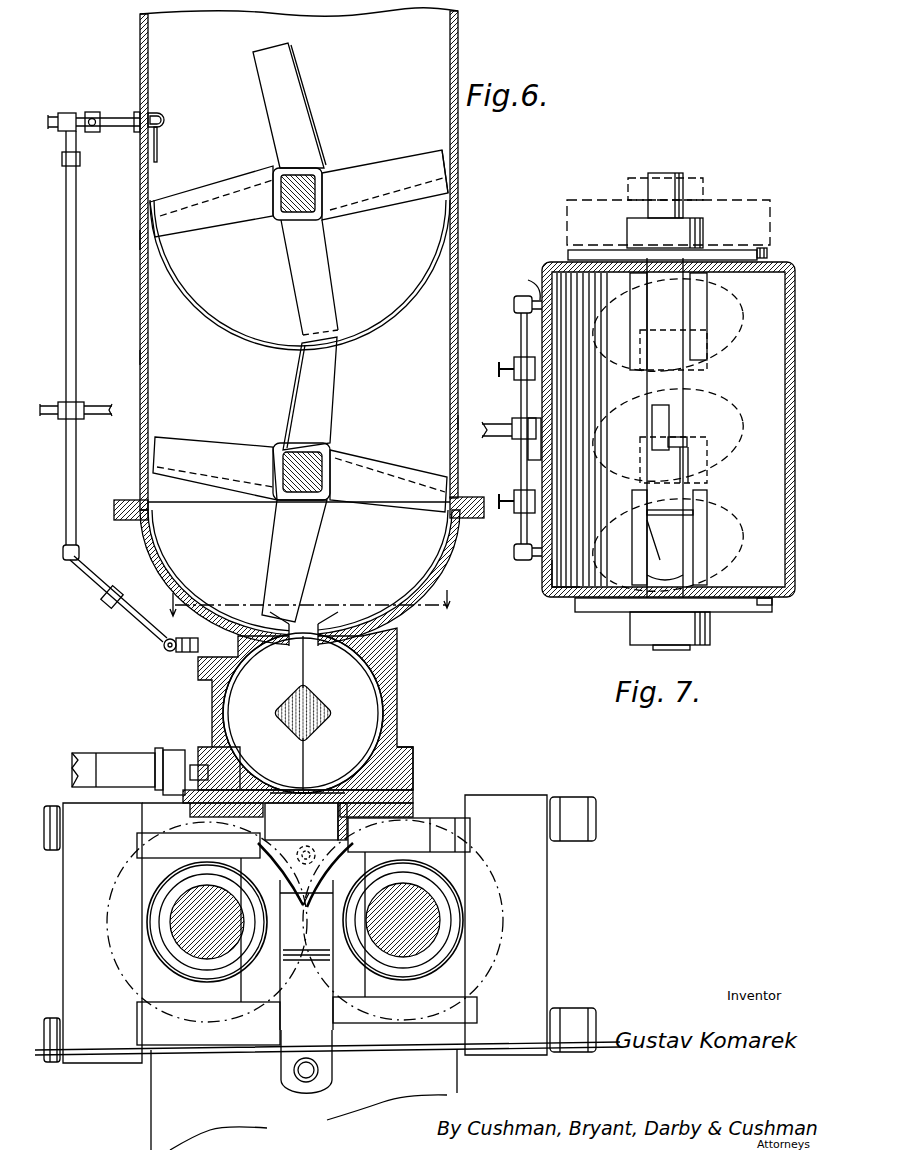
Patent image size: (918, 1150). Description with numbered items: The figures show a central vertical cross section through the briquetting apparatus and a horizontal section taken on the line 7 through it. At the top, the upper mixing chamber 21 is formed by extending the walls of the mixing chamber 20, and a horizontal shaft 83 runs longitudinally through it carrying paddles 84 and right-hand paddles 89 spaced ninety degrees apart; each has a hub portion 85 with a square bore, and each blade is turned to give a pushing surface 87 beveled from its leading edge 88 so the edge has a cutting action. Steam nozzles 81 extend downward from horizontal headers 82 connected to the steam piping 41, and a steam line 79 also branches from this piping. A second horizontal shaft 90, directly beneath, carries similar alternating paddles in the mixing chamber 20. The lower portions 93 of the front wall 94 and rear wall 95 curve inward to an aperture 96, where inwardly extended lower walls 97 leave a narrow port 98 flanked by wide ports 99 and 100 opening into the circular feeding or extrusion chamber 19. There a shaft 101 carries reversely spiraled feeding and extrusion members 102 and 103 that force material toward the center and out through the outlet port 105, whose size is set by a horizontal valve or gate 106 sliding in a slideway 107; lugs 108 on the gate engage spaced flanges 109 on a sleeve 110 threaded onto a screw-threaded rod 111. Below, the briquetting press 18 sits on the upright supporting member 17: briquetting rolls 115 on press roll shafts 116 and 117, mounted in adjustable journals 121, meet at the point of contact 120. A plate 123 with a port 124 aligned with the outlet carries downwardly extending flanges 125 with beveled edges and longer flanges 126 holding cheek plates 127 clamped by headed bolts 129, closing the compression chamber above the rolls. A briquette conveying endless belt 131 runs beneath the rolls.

In FIG. 6, the section line 7— 7 is at (309, 612).
In FIG. 6, the upright supporting member 17 is at (163, 1093).
In FIG. 6, the briquetting press 18 is at (470, 806).
In FIG. 6, the feeding or extrusion chamber 19 is at (396, 715).
In FIG. 6, the mixing chamber 20 is at (141, 432).
In FIG. 7, the mixing chamber 20 is at (540, 329).
In FIG. 6, the upper mixing chamber 21 is at (143, 225).
In FIG. 6, the steam piping 41 is at (112, 400).
In FIG. 6, the steam line 79 is at (48, 403).
In FIG. 6, the steam nozzles 81 is at (160, 140).
In FIG. 6, the horizontal headers 82 is at (111, 119).
In FIG. 6, the horizontal shaft 83 is at (323, 185).
In FIG. 6, the paddles 84 is at (392, 170).
In FIG. 6, the hub portion 85 is at (278, 215).
In FIG. 6, the pushing surface 87 is at (408, 182).
In FIG. 6, the leading edge 88 is at (366, 212).
In FIG. 6, the right-hand paddles 89 is at (298, 126).
In FIG. 6, the horizontal shaft 90 is at (318, 447).
In FIG. 6, the lower portions of walls 93 is at (186, 566).
In FIG. 7, the lower portions of walls 93 is at (562, 599).
In FIG. 6, the front wall 94 is at (140, 357).
In FIG. 6, the rear wall 95 is at (460, 422).
In FIG. 7, the rear wall 95 is at (797, 518).
In FIG. 7, the aperture 96 is at (702, 438).
In FIG. 7, the inwardly extended lower walls 97 is at (648, 418).
In FIG. 6, the narrow port 98 is at (322, 618).
In FIG. 7, the narrow port 98 is at (665, 424).
In FIG. 7, the wide port 99 is at (763, 264).
In FIG. 7, the wide port 100 is at (702, 512).
In FIG. 6, the shaft 101 is at (332, 702).
In FIG. 7, the shaft 101 is at (656, 181).
In FIG. 7, the spirally bladed feeding and extrusion member 102 is at (630, 594).
In FIG. 7, the spirally bladed feeding and extrusion member 103 is at (700, 290).
In FIG. 6, the outlet port 105 is at (306, 796).
In FIG. 7, the outlet port 105 is at (750, 208).
In FIG. 6, the horizontal valve or gate 106 is at (301, 790).
In FIG. 6, the slideway 107 is at (245, 776).
In FIG. 6, the upstanding lugs 108 is at (170, 756).
In FIG. 6, the spaced flanges 109 is at (158, 749).
In FIG. 6, the sleeve 110 is at (100, 752).
In FIG. 6, the screw-threaded rod 111 is at (84, 762).
In FIG. 7, the screw-threaded rod 111 is at (493, 442).
In FIG. 6, the briquetting rolls 115 is at (118, 880).
In FIG. 6, the press roll shaft 116 is at (426, 908).
In FIG. 6, the press roll shaft 117 is at (176, 931).
In FIG. 6, the point of contact 120 is at (303, 905).
In FIG. 6, the journals 121 is at (532, 952).
In FIG. 6, the plate 123 is at (416, 793).
In FIG. 6, the port or aperture 124 is at (301, 821).
In FIG. 6, the downwardly extending flanges 125 is at (350, 837).
In FIG. 6, the longer downwardly extending flanges 126 is at (233, 832).
In FIG. 6, the cheek plates 127 is at (392, 872).
In FIG. 6, the headed bolts 129 is at (306, 865).
In FIG. 6, the briquette conveying endless belt 131 is at (508, 1040).